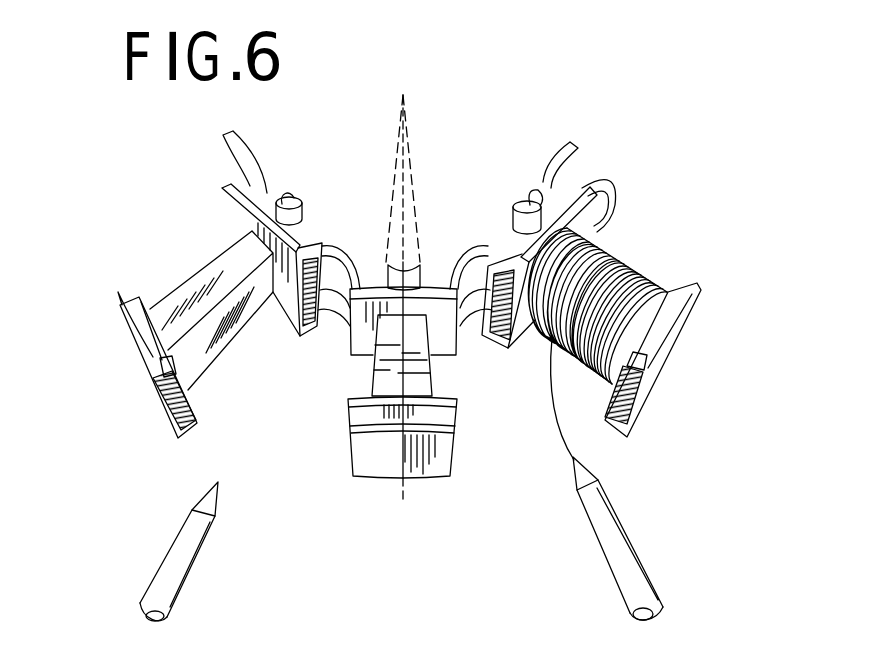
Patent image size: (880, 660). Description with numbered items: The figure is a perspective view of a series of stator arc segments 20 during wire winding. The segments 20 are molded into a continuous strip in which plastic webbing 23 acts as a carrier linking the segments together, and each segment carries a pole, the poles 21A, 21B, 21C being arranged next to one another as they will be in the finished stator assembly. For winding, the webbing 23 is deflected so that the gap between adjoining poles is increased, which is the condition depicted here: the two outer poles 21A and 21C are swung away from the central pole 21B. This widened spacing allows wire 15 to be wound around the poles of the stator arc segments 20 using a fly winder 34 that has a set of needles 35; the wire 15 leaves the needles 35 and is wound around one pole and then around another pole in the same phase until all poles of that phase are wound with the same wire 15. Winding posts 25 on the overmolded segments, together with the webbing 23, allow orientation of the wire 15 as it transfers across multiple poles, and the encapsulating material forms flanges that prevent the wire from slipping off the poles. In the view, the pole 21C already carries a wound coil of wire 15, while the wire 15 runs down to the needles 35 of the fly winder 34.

The wire 15 is at (612, 218).
The stator arc segment 20 is at (377, 373).
The pole 21A is at (138, 352).
The pole 21B is at (368, 460).
The pole 21C is at (663, 380).
The webbing 23 is at (352, 245).
The winding post 25 is at (287, 196).
The fly winder 34 is at (595, 572).
The needle 35 is at (596, 468).